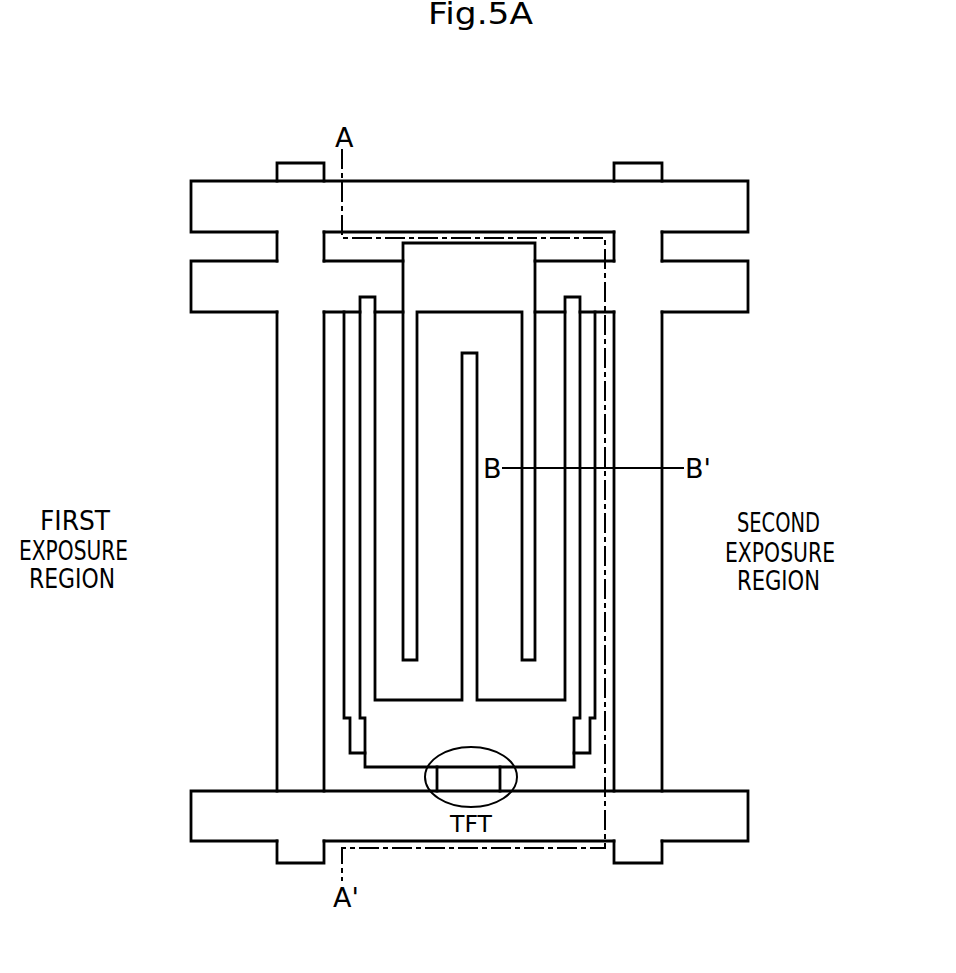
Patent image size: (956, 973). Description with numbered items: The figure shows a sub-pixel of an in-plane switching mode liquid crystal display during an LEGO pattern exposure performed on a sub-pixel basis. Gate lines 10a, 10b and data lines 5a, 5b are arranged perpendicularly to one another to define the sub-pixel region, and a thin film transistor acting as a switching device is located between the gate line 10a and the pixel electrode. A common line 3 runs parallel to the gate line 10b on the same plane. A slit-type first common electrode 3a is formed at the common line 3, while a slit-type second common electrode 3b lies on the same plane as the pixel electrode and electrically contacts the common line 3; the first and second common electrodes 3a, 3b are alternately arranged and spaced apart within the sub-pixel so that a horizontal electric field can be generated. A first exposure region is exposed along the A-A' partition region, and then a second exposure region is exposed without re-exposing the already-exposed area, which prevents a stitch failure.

The gate line 10b is at (738, 209).
The gate line 10a is at (202, 815).
The common line 3 is at (738, 286).
The first common electrode 3a is at (350, 440).
The second common electrode 3b is at (410, 548).
The data line 5a is at (298, 168).
The data line 5b is at (640, 172).